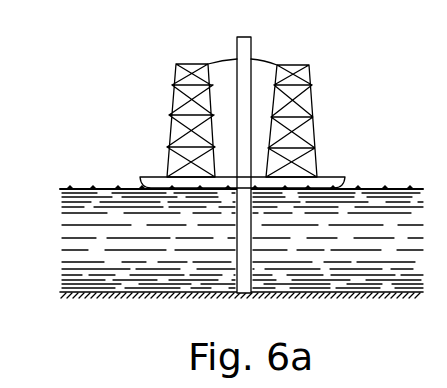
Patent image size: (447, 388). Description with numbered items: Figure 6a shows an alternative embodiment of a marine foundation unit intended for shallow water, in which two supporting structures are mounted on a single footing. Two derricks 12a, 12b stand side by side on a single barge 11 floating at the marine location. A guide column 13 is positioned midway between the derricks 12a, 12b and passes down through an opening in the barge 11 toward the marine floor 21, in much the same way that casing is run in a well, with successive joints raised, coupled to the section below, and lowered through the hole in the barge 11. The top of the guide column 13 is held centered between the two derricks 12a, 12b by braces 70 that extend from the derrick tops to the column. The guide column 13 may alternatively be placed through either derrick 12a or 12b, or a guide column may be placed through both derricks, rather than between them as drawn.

The barge 11 is at (334, 183).
The derrick 12a is at (168, 128).
The derrick 12b is at (312, 124).
The guide column 13 is at (249, 48).
The marine floor 21 is at (324, 292).
The braces 70 is at (225, 62).